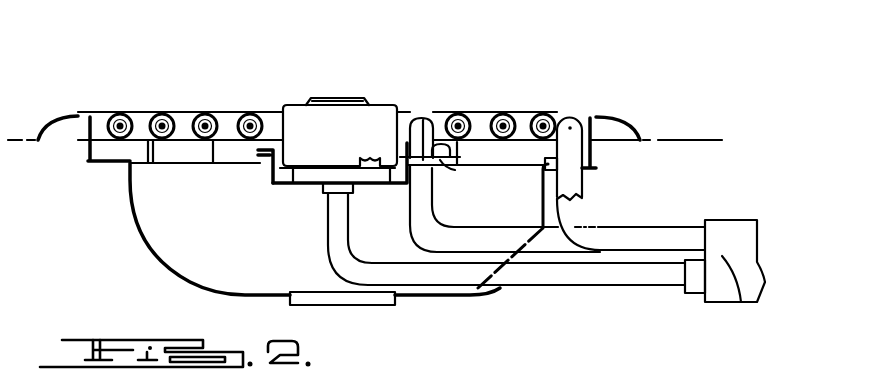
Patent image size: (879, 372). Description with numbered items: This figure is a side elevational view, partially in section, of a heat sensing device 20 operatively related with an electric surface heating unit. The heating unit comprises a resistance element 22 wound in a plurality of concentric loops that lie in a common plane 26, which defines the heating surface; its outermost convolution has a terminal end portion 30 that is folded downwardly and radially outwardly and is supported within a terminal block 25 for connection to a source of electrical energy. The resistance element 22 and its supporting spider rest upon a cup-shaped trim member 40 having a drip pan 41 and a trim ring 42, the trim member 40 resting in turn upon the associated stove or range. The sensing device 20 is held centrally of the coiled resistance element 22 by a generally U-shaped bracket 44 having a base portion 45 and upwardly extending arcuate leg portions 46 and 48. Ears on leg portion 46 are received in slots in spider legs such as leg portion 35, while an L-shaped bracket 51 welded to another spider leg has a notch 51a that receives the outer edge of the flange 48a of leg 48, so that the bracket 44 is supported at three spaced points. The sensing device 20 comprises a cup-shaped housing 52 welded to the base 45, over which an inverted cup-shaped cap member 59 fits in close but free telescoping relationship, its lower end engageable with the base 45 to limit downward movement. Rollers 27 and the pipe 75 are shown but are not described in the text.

The heat sensing device 20 is at (391, 100).
The resistance element 22 is at (494, 230).
The terminal block 25 is at (744, 300).
The common plane 26 is at (468, 114).
The roller 27 is at (508, 117).
The terminal end portion 30 is at (638, 230).
The leg portion 35 is at (212, 146).
The trim member 40 is at (76, 165).
The drip pan 41 is at (133, 217).
The trim ring 42 is at (70, 118).
The U-shaped bracket 44 is at (262, 192).
The base portion 45 is at (318, 202).
The leg portion 46 is at (258, 174).
The leg portion 48 is at (435, 178).
The flange 48a is at (408, 150).
The L-shaped bracket 51 is at (470, 176).
The notch 51a is at (423, 118).
The cup-shaped housing 52 is at (290, 188).
The cap member 59 is at (303, 115).
The supply pipe 75 is at (546, 294).